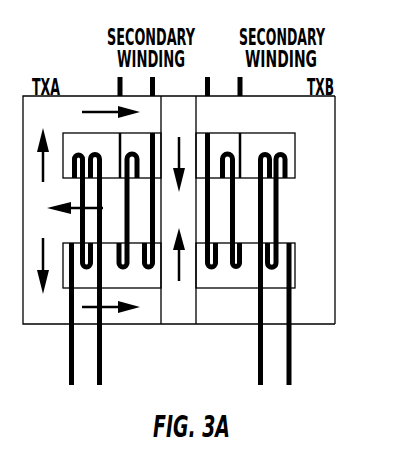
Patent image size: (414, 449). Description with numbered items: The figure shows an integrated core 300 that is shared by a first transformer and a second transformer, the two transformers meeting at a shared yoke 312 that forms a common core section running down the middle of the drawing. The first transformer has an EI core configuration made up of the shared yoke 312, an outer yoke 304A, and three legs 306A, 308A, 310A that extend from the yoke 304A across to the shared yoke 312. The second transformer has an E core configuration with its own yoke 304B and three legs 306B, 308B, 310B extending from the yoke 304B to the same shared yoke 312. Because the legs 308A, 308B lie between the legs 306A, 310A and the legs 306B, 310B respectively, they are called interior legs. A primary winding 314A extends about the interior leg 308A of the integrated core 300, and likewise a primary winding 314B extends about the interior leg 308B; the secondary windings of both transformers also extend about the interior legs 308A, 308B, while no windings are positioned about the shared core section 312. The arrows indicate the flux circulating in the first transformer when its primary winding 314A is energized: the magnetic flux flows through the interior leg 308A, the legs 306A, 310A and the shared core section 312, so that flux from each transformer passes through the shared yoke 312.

The integrated core 300 is at (328, 56).
The yoke 304A is at (33, 165).
The yoke 304B is at (320, 132).
The leg 306A is at (68, 118).
The leg 306B is at (299, 108).
The interior leg 308A is at (73, 218).
The interior leg 308B is at (282, 218).
The leg 310A is at (138, 314).
The leg 310B is at (224, 315).
The shared yoke 312 is at (180, 327).
The primary winding 314A is at (68, 378).
The primary winding 314B is at (292, 377).